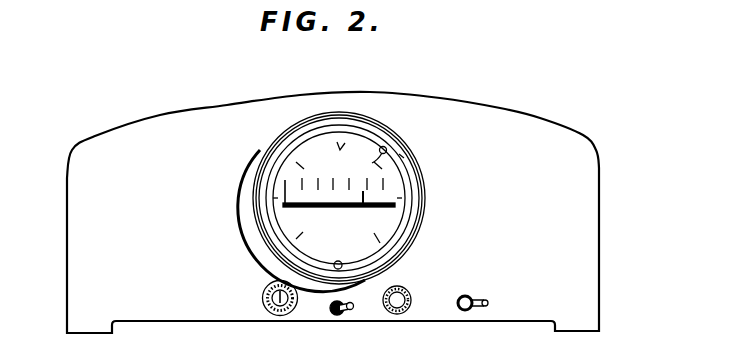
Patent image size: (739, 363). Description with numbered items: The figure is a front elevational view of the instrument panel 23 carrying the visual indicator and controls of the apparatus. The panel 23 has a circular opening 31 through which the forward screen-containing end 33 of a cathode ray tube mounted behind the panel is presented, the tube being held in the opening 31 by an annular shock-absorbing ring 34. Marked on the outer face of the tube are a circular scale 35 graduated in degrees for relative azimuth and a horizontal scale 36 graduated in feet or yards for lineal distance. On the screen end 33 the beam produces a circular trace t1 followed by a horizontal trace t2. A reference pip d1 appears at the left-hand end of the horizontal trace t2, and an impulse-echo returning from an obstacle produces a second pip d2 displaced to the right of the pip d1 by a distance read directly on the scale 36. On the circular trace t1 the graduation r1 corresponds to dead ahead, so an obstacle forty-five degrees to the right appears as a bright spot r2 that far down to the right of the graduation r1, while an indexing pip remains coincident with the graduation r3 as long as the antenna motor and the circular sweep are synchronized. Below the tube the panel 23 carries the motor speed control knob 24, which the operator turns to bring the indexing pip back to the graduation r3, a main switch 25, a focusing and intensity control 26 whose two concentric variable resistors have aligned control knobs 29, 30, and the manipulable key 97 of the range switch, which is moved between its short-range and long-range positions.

The instrument panel 23 is at (586, 285).
The control knob 24 is at (397, 314).
The main switch 25 is at (337, 315).
The focusing and intensity control 26 is at (280, 303).
The control knob 29 is at (265, 298).
The control knob 30 is at (268, 287).
The circular opening 31 is at (313, 123).
The screen-containing end 33 is at (318, 146).
The annular shock-absorbing ring 34 is at (419, 185).
The circular scale 35 is at (290, 230).
The horizontal scale 36 is at (393, 182).
The manipulable key 97 is at (492, 302).
The reference pip d1 is at (285, 203).
The echo pip d2 is at (363, 205).
The circular trace t1 is at (402, 154).
The horizontal trace t2 is at (395, 206).
The dead-ahead graduation r1 is at (340, 150).
The azimuth spot r2 is at (385, 147).
The indexing graduation r3 is at (338, 245).